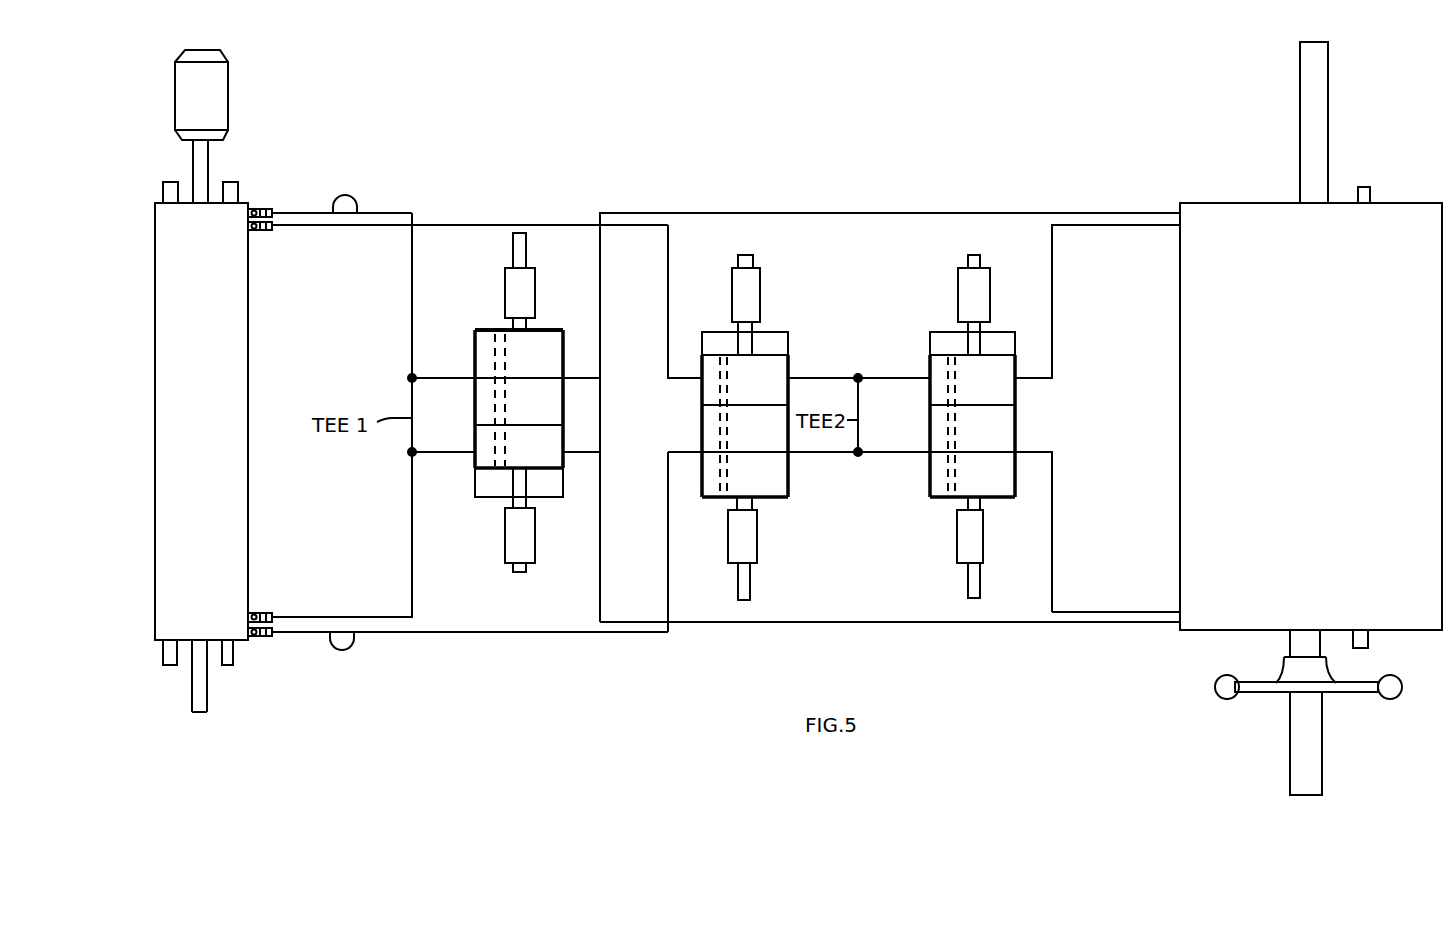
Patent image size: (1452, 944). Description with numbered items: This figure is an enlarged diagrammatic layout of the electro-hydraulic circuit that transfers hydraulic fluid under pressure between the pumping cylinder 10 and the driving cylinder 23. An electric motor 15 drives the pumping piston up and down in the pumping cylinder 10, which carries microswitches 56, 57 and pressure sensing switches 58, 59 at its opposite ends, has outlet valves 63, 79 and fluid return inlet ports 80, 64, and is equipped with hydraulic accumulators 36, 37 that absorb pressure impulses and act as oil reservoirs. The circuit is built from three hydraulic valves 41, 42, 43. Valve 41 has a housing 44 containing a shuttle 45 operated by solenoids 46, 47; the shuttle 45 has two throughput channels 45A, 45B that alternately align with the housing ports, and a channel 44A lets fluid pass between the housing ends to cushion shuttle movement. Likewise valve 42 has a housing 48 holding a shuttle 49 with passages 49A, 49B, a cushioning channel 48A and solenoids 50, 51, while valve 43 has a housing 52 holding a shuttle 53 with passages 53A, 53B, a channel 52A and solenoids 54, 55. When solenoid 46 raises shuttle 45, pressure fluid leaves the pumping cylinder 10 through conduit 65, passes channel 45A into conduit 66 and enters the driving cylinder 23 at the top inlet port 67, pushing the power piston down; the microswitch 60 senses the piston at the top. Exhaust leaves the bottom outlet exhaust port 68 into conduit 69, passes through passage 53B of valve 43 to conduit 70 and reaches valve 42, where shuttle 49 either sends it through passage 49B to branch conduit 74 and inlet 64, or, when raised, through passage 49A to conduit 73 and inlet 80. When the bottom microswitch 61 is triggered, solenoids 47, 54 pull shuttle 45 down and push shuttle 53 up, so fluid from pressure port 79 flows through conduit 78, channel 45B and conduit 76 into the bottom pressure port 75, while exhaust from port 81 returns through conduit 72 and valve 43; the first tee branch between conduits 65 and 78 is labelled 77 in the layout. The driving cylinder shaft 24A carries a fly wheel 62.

The pumping cylinder 10 is at (155, 368).
The electric motor 15 is at (228, 112).
The driving cylinder 23 is at (1324, 476).
The shaft 24A is at (1322, 750).
The hydraulic accumulator 36 is at (356, 200).
The hydraulic accumulator 37 is at (350, 632).
The hydraulic valve 41 is at (492, 409).
The hydraulic valve 42 is at (745, 427).
The hydraulic valve 43 is at (949, 426).
The housing 44 is at (494, 393).
The channel 44A is at (490, 400).
The shuttle 45 is at (542, 412).
The throughput channel 45A is at (510, 380).
The throughput channel 45B is at (557, 426).
The solenoid 46 is at (505, 288).
The solenoid 47 is at (505, 560).
The housing 48 is at (745, 400).
The channel 48A is at (698, 417).
The shuttle 49 is at (764, 390).
The passage 49A is at (776, 408).
The passage 49B is at (778, 456).
The solenoid 50 is at (740, 289).
The solenoid 51 is at (735, 552).
The housing 52 is at (946, 409).
The channel 52A is at (945, 378).
The shuttle 53 is at (992, 433).
The passage 53A is at (1000, 402).
The passage 53B is at (1008, 456).
The solenoid 54 is at (962, 288).
The solenoid 55 is at (976, 540).
The microswitch 56 is at (163, 182).
The microswitch 57 is at (172, 665).
The pressure sensing switch 58 is at (238, 183).
The pressure sensing switch 59 is at (226, 665).
The microswitch 60 is at (1370, 187).
The microswitch 61 is at (1368, 648).
The fly wheel 62 is at (1262, 694).
The outlet valve 63 is at (264, 211).
The inlet port 64 is at (260, 636).
The conduit 65 is at (412, 262).
The conduit 66 is at (830, 213).
The top inlet port 67 is at (1178, 212).
The bottom outlet exhaust port 68 is at (1178, 612).
The conduit 69 is at (1052, 460).
The conduit 70 is at (912, 454).
The conduit 72 is at (1052, 262).
The conduit 73 is at (668, 272).
The branch conduit 74 is at (668, 528).
The bottom pressure port 75 is at (1178, 629).
The conduit 76 is at (881, 623).
The conduit 77 is at (457, 455).
The conduit 78 is at (412, 541).
The pressure port 79 is at (260, 610).
The inlet port 80 is at (260, 230).
The exhaust port 81 is at (1178, 230).